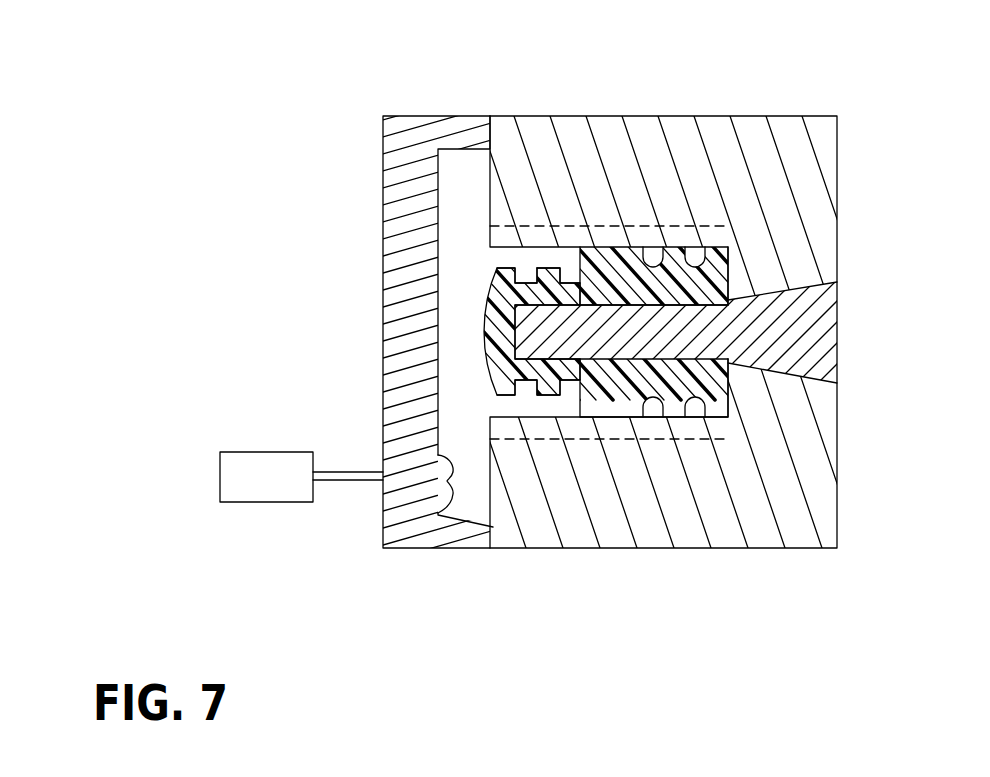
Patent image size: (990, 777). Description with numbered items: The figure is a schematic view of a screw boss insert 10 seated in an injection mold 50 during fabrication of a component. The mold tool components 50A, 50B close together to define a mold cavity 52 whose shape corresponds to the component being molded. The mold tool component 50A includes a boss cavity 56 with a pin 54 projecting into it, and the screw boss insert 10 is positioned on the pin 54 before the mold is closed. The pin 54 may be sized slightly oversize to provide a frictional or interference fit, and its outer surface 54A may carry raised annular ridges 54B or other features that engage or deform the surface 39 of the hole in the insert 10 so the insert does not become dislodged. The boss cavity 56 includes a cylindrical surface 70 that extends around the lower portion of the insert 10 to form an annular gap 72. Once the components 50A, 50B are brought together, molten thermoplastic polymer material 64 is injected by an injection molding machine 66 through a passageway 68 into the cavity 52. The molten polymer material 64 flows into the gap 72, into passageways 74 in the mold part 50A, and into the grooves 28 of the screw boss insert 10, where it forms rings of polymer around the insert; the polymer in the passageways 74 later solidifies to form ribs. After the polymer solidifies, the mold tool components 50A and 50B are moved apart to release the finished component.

The mold tool 50 is at (735, 85).
The mold tool component 50A is at (838, 222).
The mold tool component 50B is at (383, 202).
The mold cavity 52 is at (472, 206).
The pin 54 is at (838, 355).
The outer surface 54A is at (688, 316).
The raised annular ridge 54B is at (603, 297).
The groove 28 is at (694, 257).
The surface 39 is at (700, 320).
The screw boss insert 10 is at (474, 343).
The cylindrical surface 70 is at (493, 257).
The annular gap 72 is at (503, 262).
The boss cavity 56 is at (510, 405).
The molten thermoplastic polymer material 64 is at (453, 518).
The injection molding machine 66 is at (263, 503).
The passageway 68 is at (355, 482).
The passageway 74 is at (540, 227).